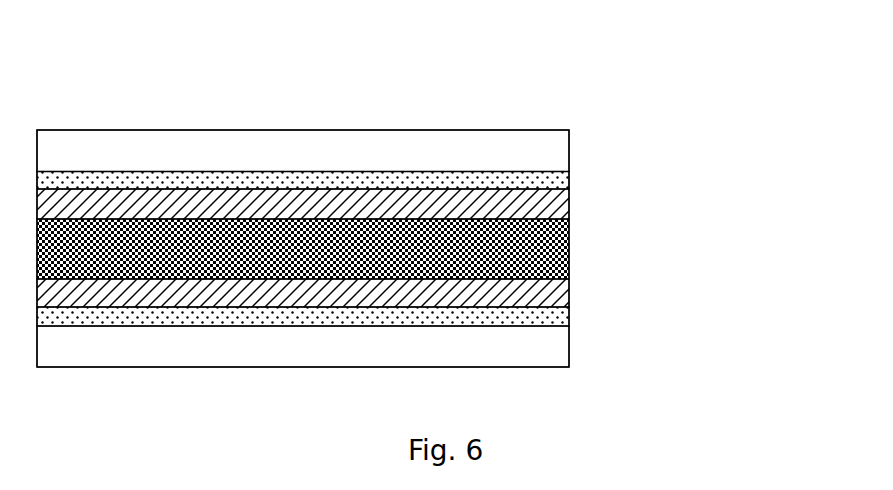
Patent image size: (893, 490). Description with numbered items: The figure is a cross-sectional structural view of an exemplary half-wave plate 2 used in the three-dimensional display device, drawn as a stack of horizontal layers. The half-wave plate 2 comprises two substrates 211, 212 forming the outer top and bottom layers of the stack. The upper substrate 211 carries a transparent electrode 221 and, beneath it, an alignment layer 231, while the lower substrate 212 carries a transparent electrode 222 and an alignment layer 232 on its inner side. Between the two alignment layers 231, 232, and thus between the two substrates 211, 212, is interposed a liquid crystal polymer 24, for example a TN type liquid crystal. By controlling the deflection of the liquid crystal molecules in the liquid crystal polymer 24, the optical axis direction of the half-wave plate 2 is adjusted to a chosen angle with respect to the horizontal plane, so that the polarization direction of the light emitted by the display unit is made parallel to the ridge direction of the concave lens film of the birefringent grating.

The half-wave plate 2 is at (539, 111).
The substrate 211 is at (394, 145).
The transparent electrode 221 is at (394, 169).
The alignment layer 231 is at (394, 199).
The liquid crystal polymer 24 is at (384, 249).
The alignment layer 232 is at (386, 300).
The transparent electrode 222 is at (387, 330).
The substrate 212 is at (391, 363).